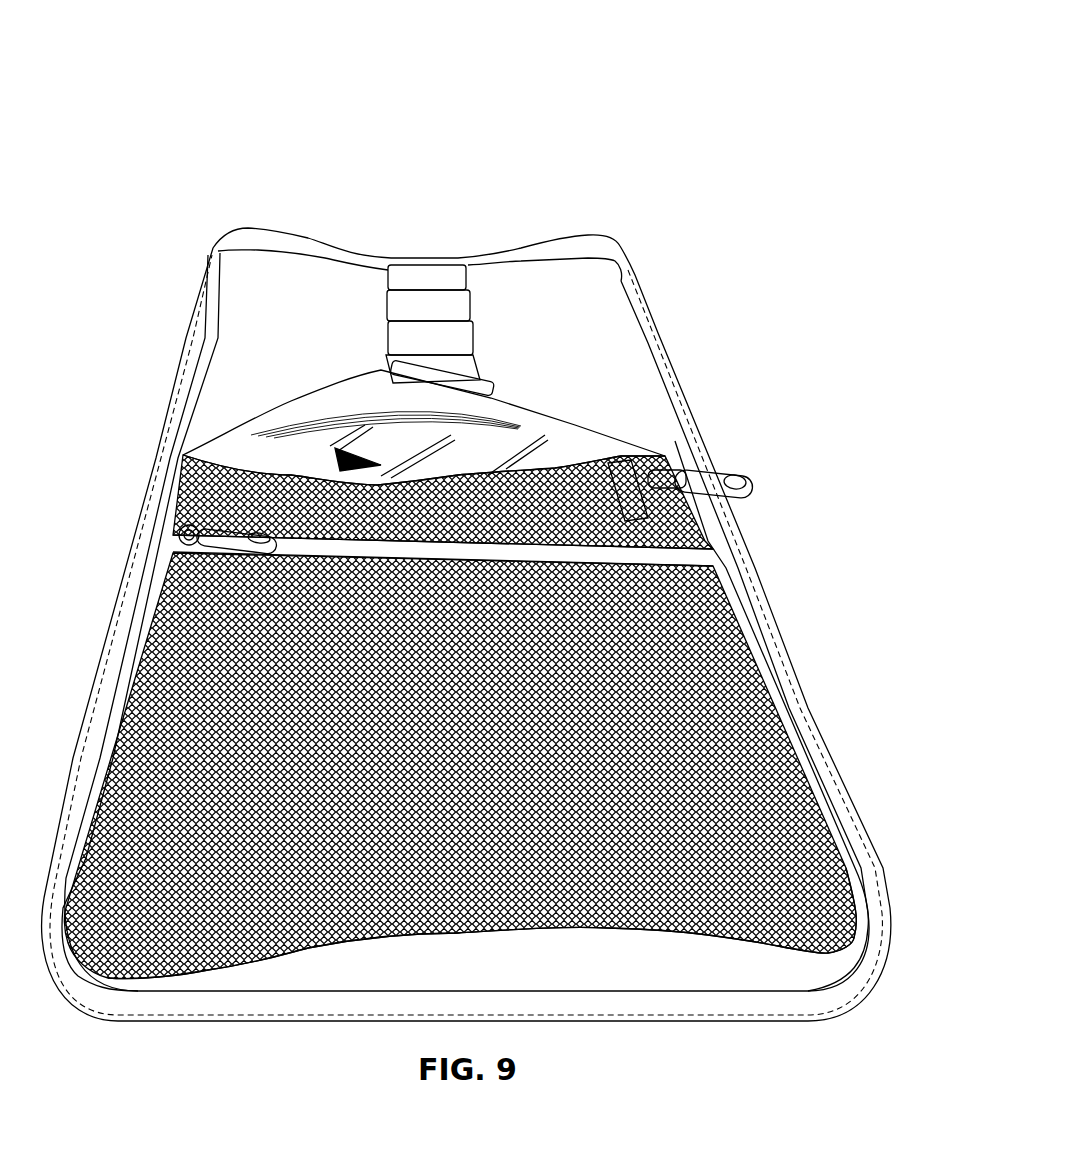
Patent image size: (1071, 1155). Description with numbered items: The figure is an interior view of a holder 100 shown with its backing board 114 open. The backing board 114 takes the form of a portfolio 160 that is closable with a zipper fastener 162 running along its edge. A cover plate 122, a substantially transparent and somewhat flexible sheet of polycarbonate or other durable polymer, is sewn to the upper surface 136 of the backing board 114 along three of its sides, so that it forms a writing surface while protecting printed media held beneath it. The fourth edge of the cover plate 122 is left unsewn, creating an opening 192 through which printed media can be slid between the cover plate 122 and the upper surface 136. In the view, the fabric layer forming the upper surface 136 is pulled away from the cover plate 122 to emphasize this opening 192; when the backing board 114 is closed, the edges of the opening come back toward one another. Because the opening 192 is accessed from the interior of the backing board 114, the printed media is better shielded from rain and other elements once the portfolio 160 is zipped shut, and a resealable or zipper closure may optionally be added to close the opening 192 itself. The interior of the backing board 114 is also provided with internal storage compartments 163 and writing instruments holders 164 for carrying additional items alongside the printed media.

The holder 100 is at (690, 107).
The backing board 114 is at (764, 647).
The cover plate 122 is at (570, 447).
The upper surface 136 is at (513, 408).
The portfolio 160 is at (650, 957).
The zipper fastener 162 is at (713, 463).
The internal storage compartments 163 is at (167, 710).
The writing instruments holders 164 is at (417, 297).
The opening 192 is at (330, 452).